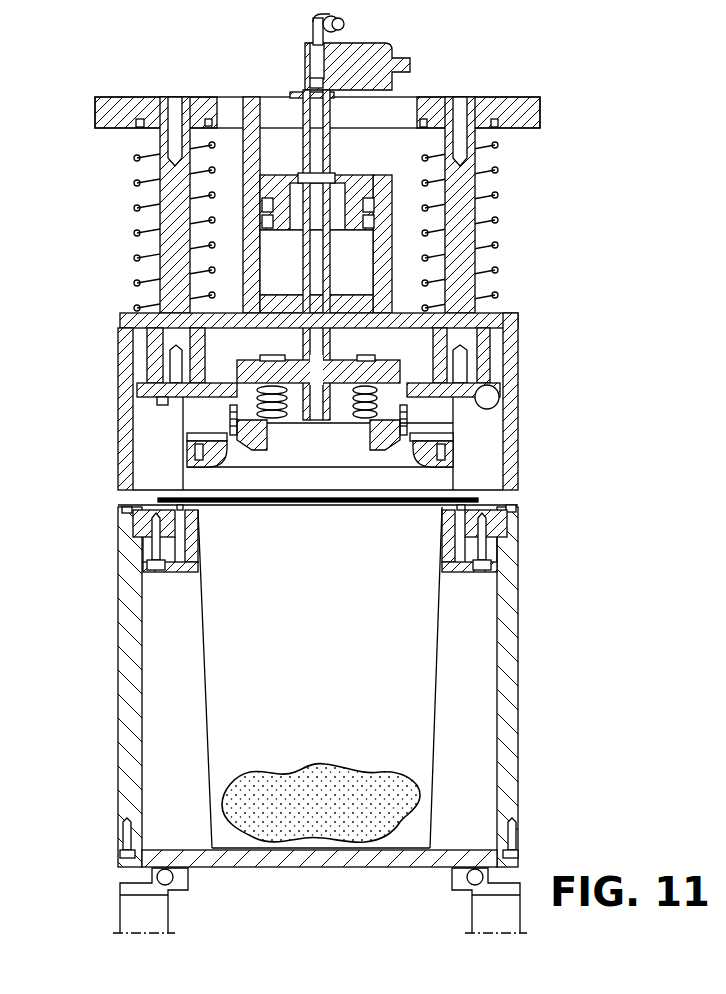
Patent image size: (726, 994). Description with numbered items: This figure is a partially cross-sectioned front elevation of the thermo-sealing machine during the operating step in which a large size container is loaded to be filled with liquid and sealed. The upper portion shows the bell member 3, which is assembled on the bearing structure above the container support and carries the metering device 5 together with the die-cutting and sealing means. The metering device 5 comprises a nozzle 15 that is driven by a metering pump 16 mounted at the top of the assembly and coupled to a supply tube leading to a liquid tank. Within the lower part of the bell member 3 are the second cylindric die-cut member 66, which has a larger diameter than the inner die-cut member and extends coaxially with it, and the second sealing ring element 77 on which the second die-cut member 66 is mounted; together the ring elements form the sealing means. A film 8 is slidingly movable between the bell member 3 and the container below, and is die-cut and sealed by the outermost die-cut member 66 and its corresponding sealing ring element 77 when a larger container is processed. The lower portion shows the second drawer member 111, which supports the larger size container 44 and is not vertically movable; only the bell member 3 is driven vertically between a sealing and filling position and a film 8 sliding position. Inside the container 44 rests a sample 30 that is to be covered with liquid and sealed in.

The metering pump 16 is at (387, 68).
The metering device 5 is at (408, 244).
The bell member 3 is at (533, 401).
The nozzle 15 is at (318, 400).
The film 8 is at (372, 476).
The second sealing ring element 77 is at (190, 443).
The second cylindric die-cut member 66 is at (185, 453).
The second drawer member 111 is at (537, 658).
The larger size container 44 is at (440, 735).
The sample 30 is at (268, 805).